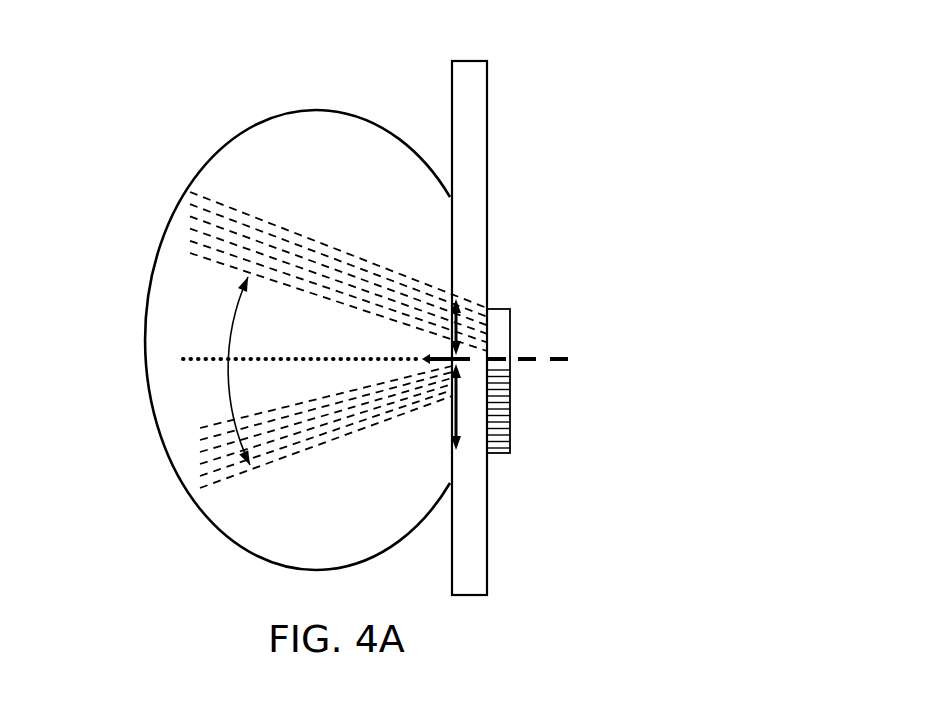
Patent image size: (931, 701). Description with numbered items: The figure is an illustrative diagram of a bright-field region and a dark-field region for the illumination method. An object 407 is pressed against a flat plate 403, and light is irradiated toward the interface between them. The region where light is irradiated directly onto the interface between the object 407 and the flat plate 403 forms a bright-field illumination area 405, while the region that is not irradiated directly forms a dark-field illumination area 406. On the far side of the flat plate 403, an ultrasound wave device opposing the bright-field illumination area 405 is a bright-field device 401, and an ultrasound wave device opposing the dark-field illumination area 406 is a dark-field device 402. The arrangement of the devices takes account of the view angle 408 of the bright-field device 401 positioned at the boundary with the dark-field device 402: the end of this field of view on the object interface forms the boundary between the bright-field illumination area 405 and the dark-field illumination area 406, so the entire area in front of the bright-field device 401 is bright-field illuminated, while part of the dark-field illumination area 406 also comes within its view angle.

The bright-field device 401 is at (497, 320).
The dark-field device 402 is at (498, 432).
The flat plate 403 is at (474, 103).
The bright-field illumination area 405 is at (487, 307).
The dark-field illumination area 406 is at (452, 420).
The object 407 is at (287, 133).
The view angle of the boundary bright-field device 408 is at (240, 345).